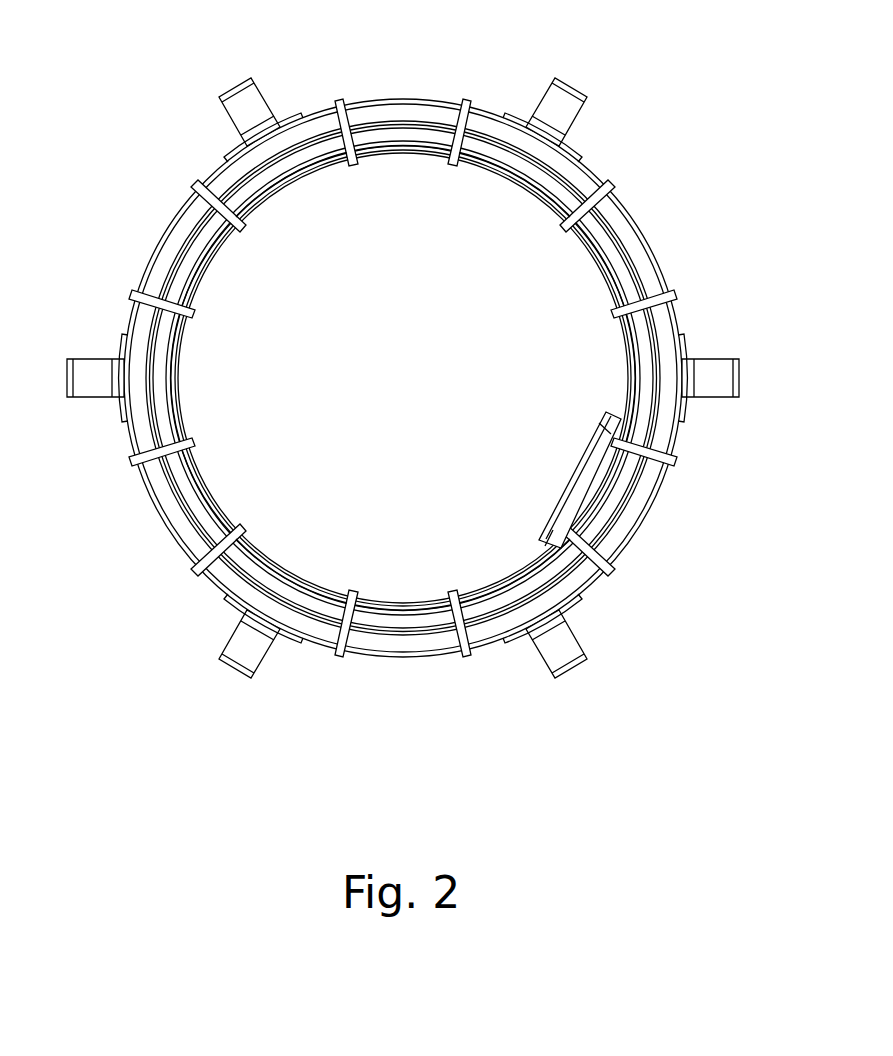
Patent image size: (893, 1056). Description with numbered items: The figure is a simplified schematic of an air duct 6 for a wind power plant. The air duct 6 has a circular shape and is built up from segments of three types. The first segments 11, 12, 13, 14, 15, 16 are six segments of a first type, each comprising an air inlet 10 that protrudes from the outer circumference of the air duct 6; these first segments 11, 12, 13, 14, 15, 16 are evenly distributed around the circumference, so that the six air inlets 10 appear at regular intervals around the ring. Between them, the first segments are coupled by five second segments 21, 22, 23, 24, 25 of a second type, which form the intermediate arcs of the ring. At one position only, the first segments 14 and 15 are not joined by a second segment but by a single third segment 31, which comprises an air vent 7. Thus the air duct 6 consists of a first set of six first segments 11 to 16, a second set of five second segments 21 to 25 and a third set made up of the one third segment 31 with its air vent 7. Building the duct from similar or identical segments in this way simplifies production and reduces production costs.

The air duct 6 is at (690, 137).
The air vent 7 is at (580, 480).
The air inlet 10 is at (258, 84).
The first segment 11 is at (183, 378).
The first segment 12 is at (287, 183).
The first segment 13 is at (520, 190).
The first segment 14 is at (632, 380).
The first segment 15 is at (545, 565).
The first segment 16 is at (300, 578).
The second segment 21 is at (205, 268).
The second segment 22 is at (405, 160).
The second segment 23 is at (598, 268).
The second segment 24 is at (405, 600).
The second segment 25 is at (210, 492).
The third segment 31 is at (553, 476).